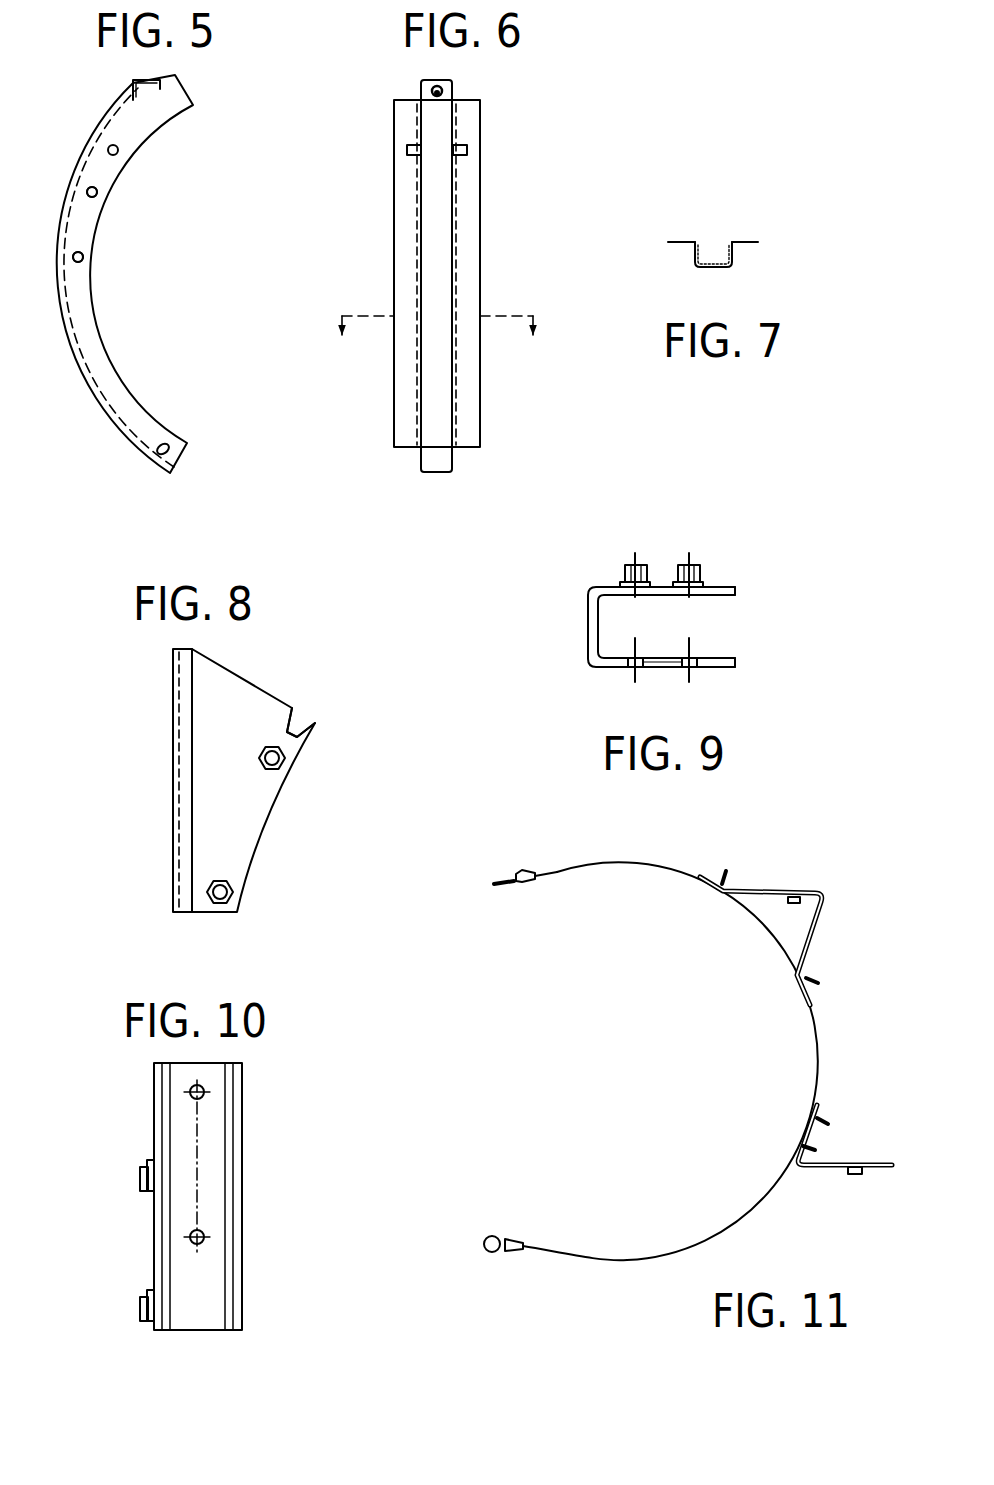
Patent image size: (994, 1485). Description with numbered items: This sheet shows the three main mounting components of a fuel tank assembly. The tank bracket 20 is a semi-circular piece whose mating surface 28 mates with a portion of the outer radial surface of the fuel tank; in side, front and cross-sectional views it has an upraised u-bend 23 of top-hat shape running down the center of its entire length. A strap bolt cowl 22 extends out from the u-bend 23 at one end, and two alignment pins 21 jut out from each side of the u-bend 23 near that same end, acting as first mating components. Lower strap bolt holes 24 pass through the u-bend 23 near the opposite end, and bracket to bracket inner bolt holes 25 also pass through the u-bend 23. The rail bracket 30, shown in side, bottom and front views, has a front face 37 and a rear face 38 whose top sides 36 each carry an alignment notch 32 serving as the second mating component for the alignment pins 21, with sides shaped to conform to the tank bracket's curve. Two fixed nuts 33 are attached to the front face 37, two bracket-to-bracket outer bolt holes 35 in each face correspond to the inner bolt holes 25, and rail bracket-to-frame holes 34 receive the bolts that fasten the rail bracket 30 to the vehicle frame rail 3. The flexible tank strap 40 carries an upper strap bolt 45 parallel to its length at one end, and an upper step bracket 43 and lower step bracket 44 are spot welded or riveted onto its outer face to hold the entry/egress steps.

In FIG. 8, the frame rail 3 is at (210, 782).
In FIG. 5, the tank bracket 20 is at (129, 269).
In FIG. 6, the tank bracket 20 is at (437, 298).
In FIG. 7, the tank bracket 20 is at (720, 247).
In FIG. 5, the alignment pin 21 is at (119, 155).
In FIG. 6, the alignment pin 21 is at (405, 150).
In FIG. 5, the strap bolt cowl 22 is at (148, 80).
In FIG. 6, the u-bend 23 is at (442, 476).
In FIG. 7, the u-bend 23 is at (713, 270).
In FIG. 5, the lower strap bolt hole 24 is at (166, 440).
In FIG. 5, the bracket to bracket inner bolt hole 25 is at (86, 258).
In FIG. 5, the mating surface 28 is at (106, 349).
In FIG. 7, the mating surface 28 is at (685, 238).
In FIG. 8, the rail bracket 30 is at (245, 783).
In FIG. 9, the rail bracket 30 is at (665, 615).
In FIG. 10, the rail bracket 30 is at (191, 1196).
In FIG. 8, the alignment notch 32 is at (296, 724).
In FIG. 8, the fixed nut 33 is at (290, 767).
In FIG. 9, the fixed nut 33 is at (698, 561).
In FIG. 10, the fixed nut 33 is at (137, 1164).
In FIG. 10, the rail bracket-to-frame hole 34 is at (210, 1092).
In FIG. 9, the bracket-to-bracket outer bolt hole 35 is at (627, 671).
In FIG. 8, the top side 36 is at (257, 672).
In FIG. 9, the front face 37 is at (728, 585).
In FIG. 9, the rear face 38 is at (658, 668).
In FIG. 11, the tank strap 40 is at (642, 861).
In FIG. 11, the upper step bracket 43 is at (783, 885).
In FIG. 11, the lower step bracket 44 is at (828, 1177).
In FIG. 11, the upper strap bolt 45 is at (505, 870).